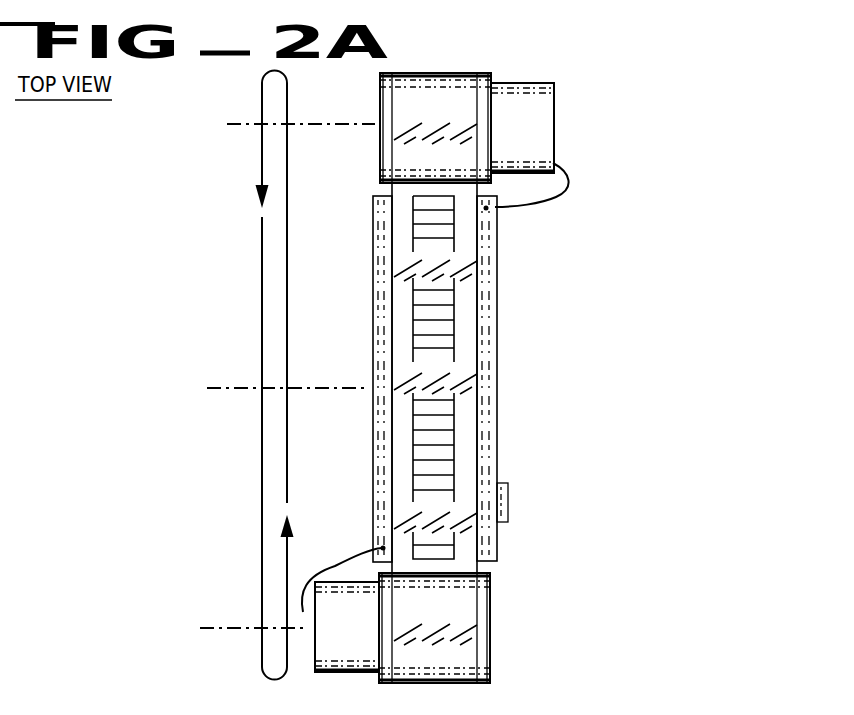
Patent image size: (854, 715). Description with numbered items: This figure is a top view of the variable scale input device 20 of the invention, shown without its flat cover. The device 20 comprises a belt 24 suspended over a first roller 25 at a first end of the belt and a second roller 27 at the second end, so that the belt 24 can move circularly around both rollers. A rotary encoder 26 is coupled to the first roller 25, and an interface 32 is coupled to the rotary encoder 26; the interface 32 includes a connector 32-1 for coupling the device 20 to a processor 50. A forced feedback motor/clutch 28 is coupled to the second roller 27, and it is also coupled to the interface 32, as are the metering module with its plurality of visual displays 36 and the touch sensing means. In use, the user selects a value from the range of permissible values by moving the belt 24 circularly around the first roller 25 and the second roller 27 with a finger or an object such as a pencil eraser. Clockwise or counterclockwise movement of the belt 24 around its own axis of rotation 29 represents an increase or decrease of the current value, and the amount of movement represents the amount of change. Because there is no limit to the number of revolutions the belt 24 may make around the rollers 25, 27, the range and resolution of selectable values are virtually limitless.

The variable scale input device 20 is at (692, 204).
The belt 24 is at (447, 645).
The first roller 25 is at (490, 617).
The rotary encoder 26 is at (315, 617).
The second roller 27 is at (380, 145).
The forced feedback motor/clutch 28 is at (542, 117).
The axis of rotation 29 is at (243, 392).
The interface 32 is at (380, 322).
The connector 32-1 is at (505, 479).
The visual displays 36 is at (458, 327).
The processor 50 is at (520, 504).